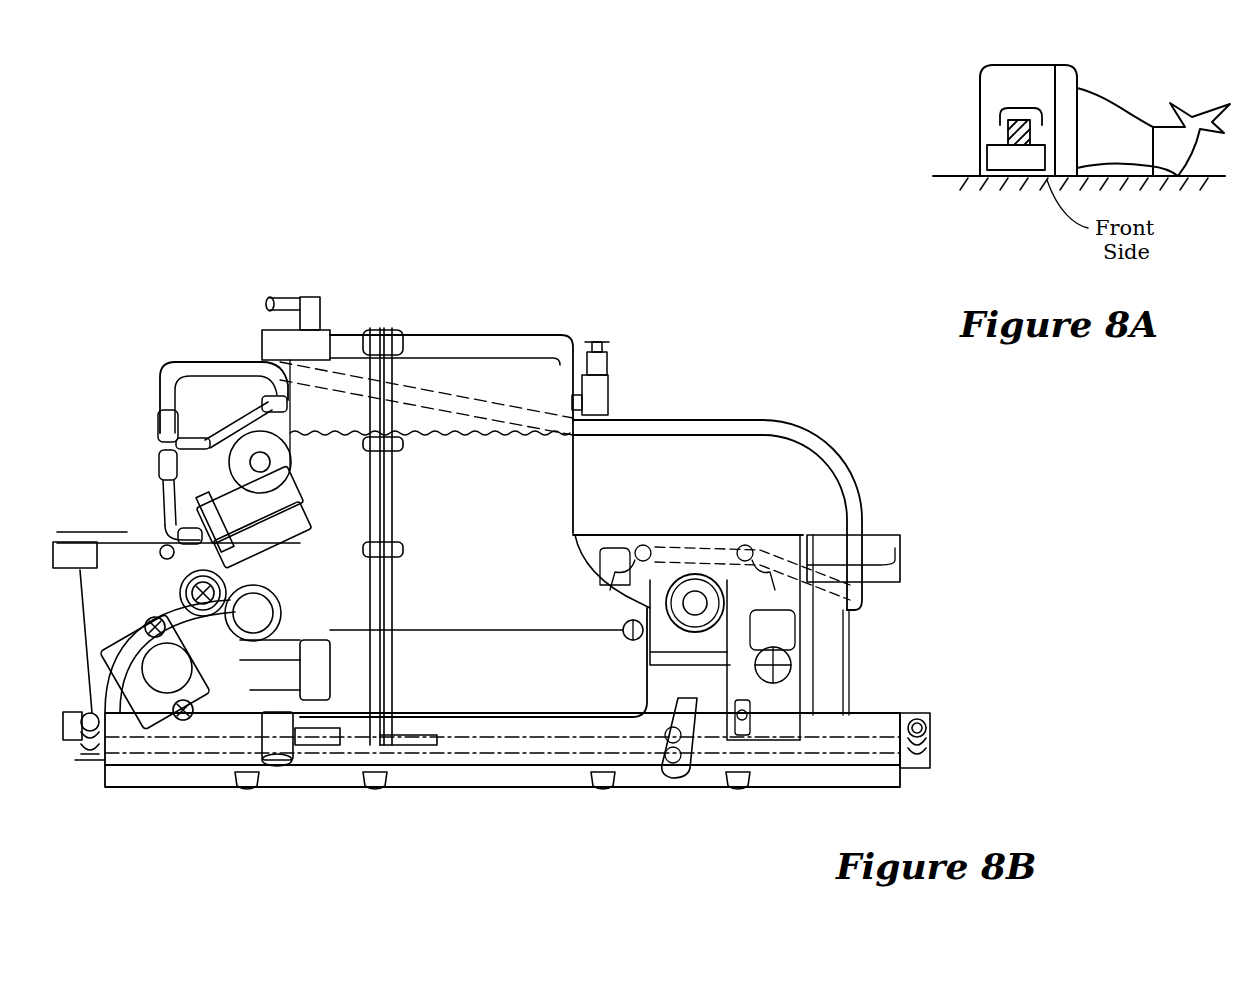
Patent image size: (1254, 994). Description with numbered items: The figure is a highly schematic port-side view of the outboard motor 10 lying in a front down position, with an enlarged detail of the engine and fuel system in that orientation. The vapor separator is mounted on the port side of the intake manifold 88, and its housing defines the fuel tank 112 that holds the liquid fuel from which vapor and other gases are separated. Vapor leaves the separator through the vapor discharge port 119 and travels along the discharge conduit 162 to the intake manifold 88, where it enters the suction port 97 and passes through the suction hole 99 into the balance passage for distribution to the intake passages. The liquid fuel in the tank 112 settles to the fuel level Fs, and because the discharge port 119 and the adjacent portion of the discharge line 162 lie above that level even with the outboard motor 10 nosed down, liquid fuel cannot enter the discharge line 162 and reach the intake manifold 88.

In FIG. 8A, the outboard motor 10 is at (1103, 97).
In FIG. 8A, the intake manifold 88 is at (1006, 164).
In FIG. 8B, the intake manifold 88 is at (475, 800).
In FIG. 8A, the discharge conduit 162 is at (1020, 110).
In FIG. 8B, the discharge conduit 162 is at (718, 420).
In FIG. 8A, the fuel level Fs is at (1022, 110).
In FIG. 8B, the fuel level Fs is at (464, 431).
In FIG. 8B, the vapor discharge port 119 is at (276, 400).
In FIG. 8B, the fuel tank 112 is at (557, 484).
In FIG. 8B, the suction port 97 is at (758, 545).
In FIG. 8B, the suction hole 99 is at (645, 610).